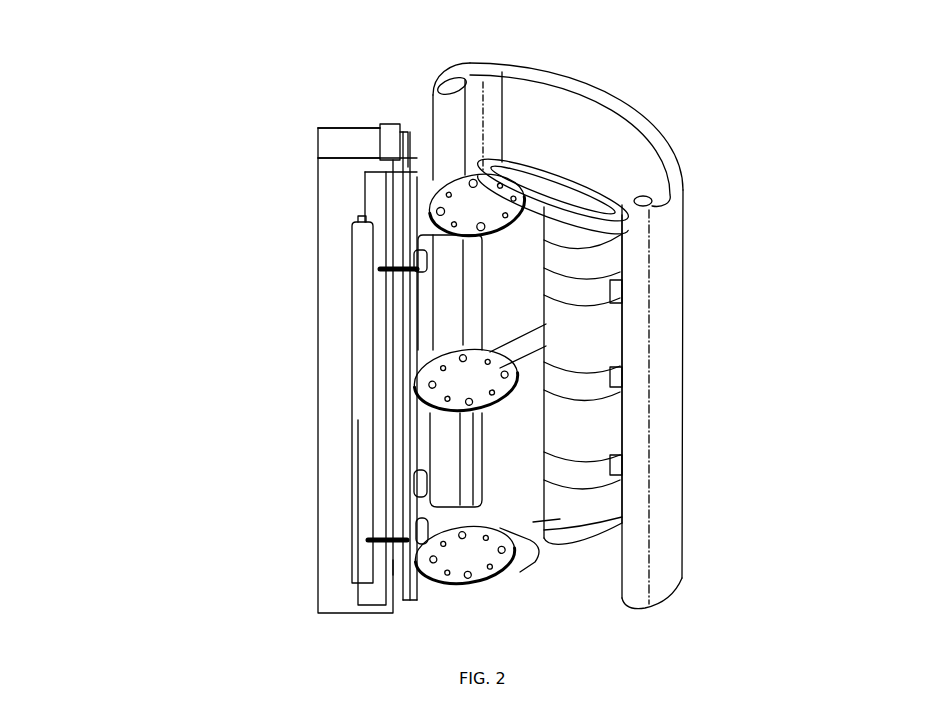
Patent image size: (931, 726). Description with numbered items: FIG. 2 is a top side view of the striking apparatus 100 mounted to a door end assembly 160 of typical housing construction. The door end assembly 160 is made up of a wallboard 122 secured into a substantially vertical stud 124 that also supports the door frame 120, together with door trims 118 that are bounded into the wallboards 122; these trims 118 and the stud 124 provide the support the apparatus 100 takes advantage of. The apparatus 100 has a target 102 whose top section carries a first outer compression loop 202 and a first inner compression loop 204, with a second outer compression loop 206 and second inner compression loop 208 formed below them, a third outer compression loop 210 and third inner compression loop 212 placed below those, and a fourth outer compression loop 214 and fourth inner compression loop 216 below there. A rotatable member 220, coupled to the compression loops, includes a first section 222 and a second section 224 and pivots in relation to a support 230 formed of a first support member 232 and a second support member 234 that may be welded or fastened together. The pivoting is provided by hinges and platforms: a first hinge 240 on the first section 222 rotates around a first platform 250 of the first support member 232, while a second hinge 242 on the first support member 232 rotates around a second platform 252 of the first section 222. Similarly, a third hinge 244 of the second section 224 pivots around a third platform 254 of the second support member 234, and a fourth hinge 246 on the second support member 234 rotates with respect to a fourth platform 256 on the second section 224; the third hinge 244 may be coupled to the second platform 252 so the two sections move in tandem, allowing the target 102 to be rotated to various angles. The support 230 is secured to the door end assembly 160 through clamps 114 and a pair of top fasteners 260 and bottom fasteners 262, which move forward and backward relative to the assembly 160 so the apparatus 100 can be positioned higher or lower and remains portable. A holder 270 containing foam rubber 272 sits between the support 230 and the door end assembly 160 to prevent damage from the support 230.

The striking apparatus 100 is at (52, 146).
The target 102 is at (613, 109).
The clamps 114 is at (360, 312).
The door trims 118 is at (380, 245).
The door frame 120 is at (407, 152).
The wallboard 122 is at (320, 121).
The stud 124 is at (399, 137).
The door end assembly 160 is at (360, 128).
The first outer compression loop 202 is at (605, 181).
The first inner compression loop 204 is at (597, 220).
The second outer compression loop 206 is at (597, 320).
The second inner compression loop 208 is at (600, 297).
The third outer compression loop 210 is at (597, 420).
The third inner compression loop 212 is at (597, 395).
The fourth outer compression loop 214 is at (592, 498).
The fourth inner compression loop 216 is at (597, 470).
The rotatable member 220 is at (533, 522).
The first section 222 is at (520, 267).
The second section 224 is at (520, 445).
The support 230 is at (410, 387).
The first support member 232 is at (413, 348).
The second support member 234 is at (413, 500).
The first hinge 240 is at (493, 212).
The second hinge 242 is at (463, 373).
The third hinge 244 is at (590, 380).
The fourth hinge 246 is at (473, 556).
The first platform 250 is at (412, 210).
The second platform 252 is at (570, 350).
The third platform 254 is at (413, 410).
The fourth platform 256 is at (527, 558).
The top fasteners 260 is at (380, 268).
The bottom fasteners 262 is at (413, 477).
The holder 270 is at (409, 560).
The foam rubber 272 is at (393, 575).